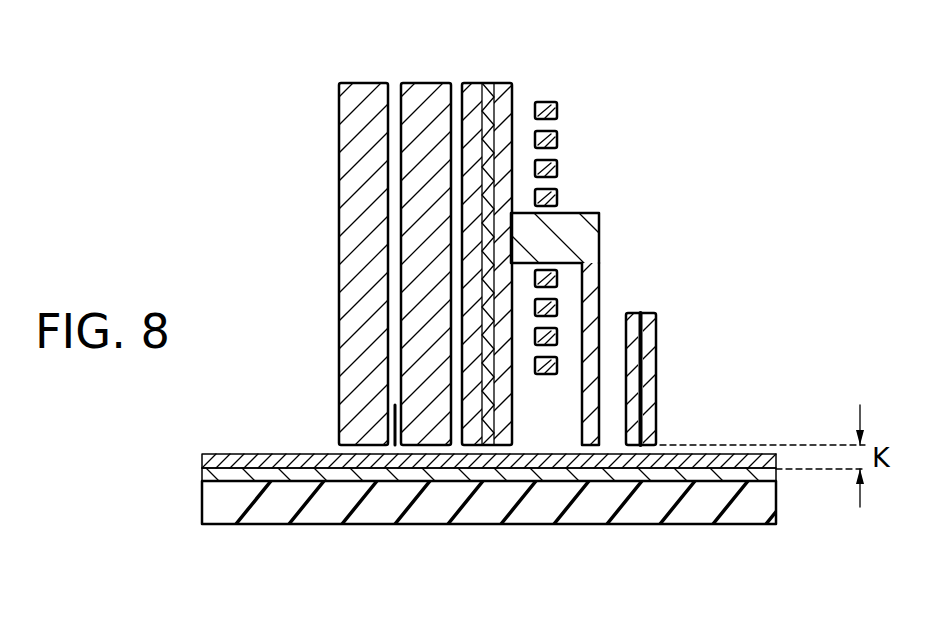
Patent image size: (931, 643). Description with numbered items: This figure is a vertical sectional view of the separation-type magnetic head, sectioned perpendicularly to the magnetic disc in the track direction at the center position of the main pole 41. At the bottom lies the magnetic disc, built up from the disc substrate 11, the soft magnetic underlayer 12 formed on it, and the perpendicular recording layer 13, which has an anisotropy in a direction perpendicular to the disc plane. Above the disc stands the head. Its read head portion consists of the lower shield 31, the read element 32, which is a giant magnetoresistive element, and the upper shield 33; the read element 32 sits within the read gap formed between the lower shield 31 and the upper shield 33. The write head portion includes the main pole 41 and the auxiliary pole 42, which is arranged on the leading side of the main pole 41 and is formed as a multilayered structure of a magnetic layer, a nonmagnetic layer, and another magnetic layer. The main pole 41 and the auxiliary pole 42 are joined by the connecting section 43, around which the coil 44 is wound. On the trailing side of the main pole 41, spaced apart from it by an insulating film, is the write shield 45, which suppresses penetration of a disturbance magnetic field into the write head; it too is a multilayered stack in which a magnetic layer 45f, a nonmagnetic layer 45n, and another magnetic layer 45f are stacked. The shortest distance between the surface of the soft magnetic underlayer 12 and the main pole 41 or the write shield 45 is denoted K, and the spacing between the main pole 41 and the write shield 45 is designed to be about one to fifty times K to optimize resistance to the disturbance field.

The disc substrate 11 is at (205, 500).
The soft magnetic underlayer 12 is at (208, 472).
The perpendicular recording layer 13 is at (217, 456).
The lower shield 31 is at (365, 88).
The read element 32 is at (393, 414).
The upper shield 33 is at (428, 88).
The main pole 41 is at (587, 433).
The auxiliary pole 42 is at (479, 68).
The connecting section 43 is at (588, 213).
The coil 44 is at (550, 102).
The write shield 45 is at (670, 368).
The magnetic layer 45f is at (632, 313).
The nonmagnetic layer 45n is at (640, 313).